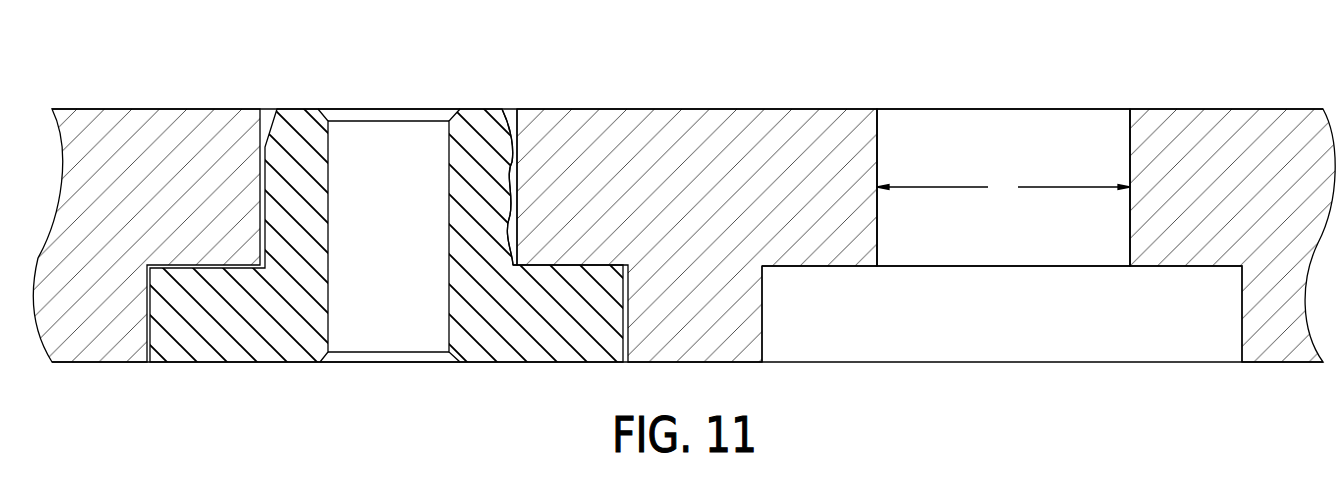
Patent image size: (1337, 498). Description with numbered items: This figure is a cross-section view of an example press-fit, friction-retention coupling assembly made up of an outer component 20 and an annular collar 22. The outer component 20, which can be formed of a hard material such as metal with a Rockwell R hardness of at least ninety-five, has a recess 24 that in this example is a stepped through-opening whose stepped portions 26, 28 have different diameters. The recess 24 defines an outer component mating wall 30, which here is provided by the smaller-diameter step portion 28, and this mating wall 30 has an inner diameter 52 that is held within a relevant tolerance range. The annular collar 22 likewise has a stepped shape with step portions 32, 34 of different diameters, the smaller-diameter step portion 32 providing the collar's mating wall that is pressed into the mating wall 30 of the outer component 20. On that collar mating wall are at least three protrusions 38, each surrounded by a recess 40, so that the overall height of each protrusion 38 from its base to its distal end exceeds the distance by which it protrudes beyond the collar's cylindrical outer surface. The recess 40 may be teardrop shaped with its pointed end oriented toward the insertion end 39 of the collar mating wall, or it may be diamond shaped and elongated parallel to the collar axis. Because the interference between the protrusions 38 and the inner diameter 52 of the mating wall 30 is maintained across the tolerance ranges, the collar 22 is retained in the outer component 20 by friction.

The outer component 20 is at (108, 368).
The annular collar 22 is at (213, 368).
The recess 24 is at (940, 330).
The stepped portion 26 is at (1192, 322).
The stepped portion 28 is at (1072, 138).
The outer component mating wall 30 is at (877, 160).
The step portion 32 is at (302, 178).
The step portion 34 is at (562, 318).
The protrusion 38 is at (512, 207).
The insertion end 39 is at (505, 118).
The recess 40 is at (512, 178).
The inner diameter 52 is at (1003, 188).